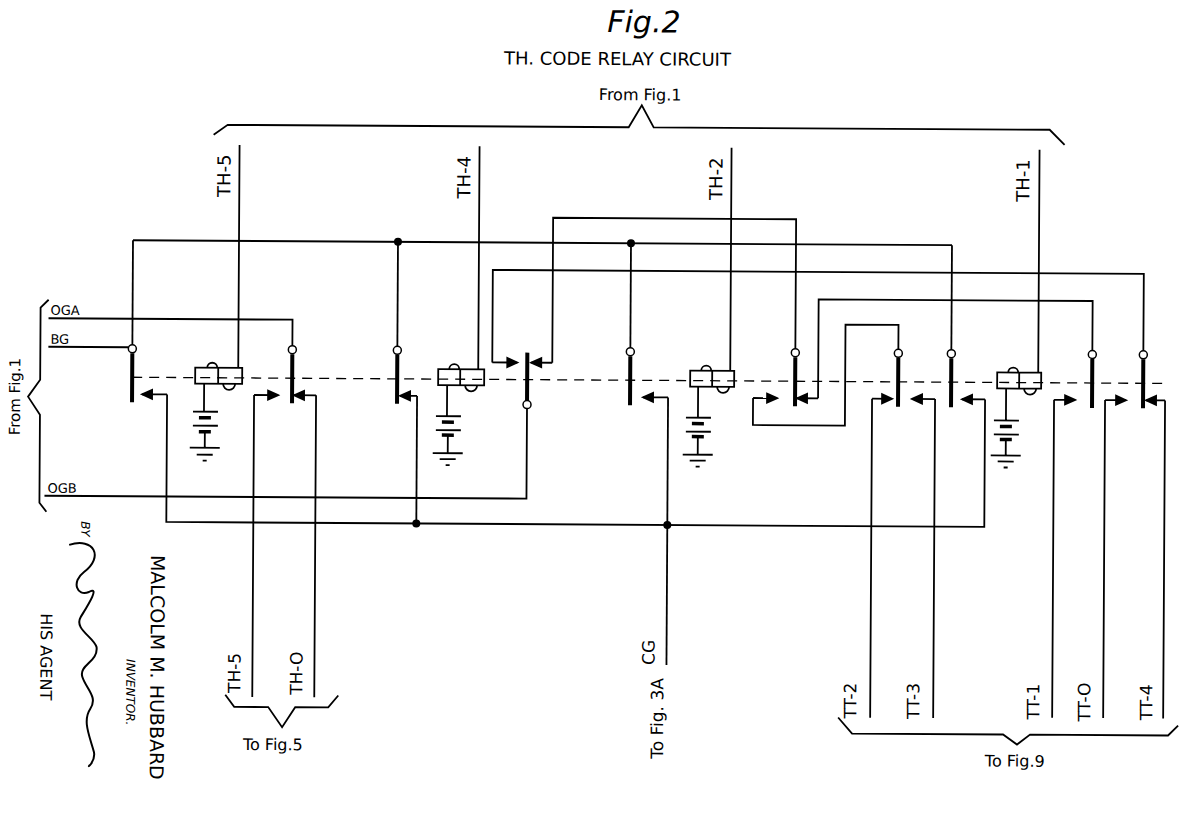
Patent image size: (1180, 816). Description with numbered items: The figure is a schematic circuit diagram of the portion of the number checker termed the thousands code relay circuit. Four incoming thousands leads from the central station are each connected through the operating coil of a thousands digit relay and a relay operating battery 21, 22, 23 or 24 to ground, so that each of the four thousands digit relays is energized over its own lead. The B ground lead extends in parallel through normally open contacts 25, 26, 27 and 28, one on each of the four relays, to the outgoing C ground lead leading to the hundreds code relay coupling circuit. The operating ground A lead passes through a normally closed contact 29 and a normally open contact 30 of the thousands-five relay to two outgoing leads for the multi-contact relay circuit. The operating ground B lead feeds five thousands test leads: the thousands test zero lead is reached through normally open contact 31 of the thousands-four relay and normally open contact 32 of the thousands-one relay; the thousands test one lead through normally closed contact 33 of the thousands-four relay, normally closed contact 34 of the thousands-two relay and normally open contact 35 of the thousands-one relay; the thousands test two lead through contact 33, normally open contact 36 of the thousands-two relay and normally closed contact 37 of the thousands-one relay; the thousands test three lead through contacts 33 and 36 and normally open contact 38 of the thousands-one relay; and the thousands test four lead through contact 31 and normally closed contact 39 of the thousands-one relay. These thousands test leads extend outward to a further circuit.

The relay operating battery 21 is at (1012, 440).
The relay operating battery 22 is at (700, 442).
The relay operating battery 23 is at (450, 440).
The relay operating battery 24 is at (208, 436).
The normally open contact 25 is at (981, 400).
The normally open contact 26 is at (662, 400).
The normally open contact 27 is at (412, 400).
The normally open contact 28 is at (162, 396).
The normally closed contact 29 is at (313, 399).
The normally open contact 30 is at (258, 399).
The normally open contact 31 is at (494, 360).
The normally open contact 32 is at (1110, 400).
The normally closed contact 33 is at (550, 361).
The normally closed contact 34 is at (813, 399).
The normally open contact 35 is at (1060, 400).
The normally open contact 36 is at (760, 399).
The normally closed contact 37 is at (879, 400).
The normally open contact 38 is at (931, 400).
The normally closed contact 39 is at (1160, 400).